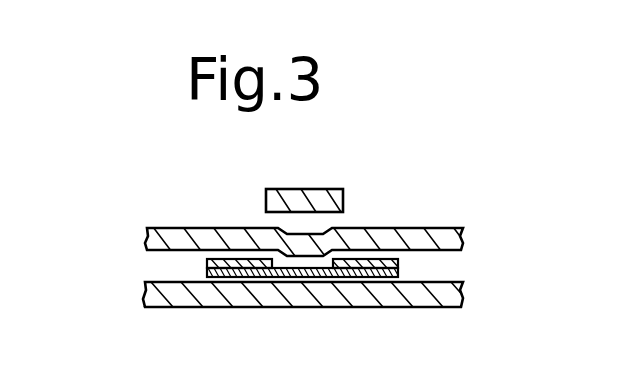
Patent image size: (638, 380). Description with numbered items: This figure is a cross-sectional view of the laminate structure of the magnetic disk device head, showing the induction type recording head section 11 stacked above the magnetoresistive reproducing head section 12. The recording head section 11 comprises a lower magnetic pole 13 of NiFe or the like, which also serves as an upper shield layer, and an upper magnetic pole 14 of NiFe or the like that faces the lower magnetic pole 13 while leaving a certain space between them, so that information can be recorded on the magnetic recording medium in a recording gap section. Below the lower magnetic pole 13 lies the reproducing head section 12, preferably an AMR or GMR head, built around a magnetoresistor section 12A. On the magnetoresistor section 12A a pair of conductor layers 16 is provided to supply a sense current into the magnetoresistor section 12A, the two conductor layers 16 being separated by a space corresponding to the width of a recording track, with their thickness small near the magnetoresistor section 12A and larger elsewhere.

The recording head section 11 is at (248, 196).
The reproducing head section 12 is at (188, 264).
The magnetoresistor section 12A is at (358, 277).
The lower magnetic pole 13 is at (435, 228).
The upper magnetic pole 14 is at (321, 180).
The conductor layers 16 is at (400, 263).